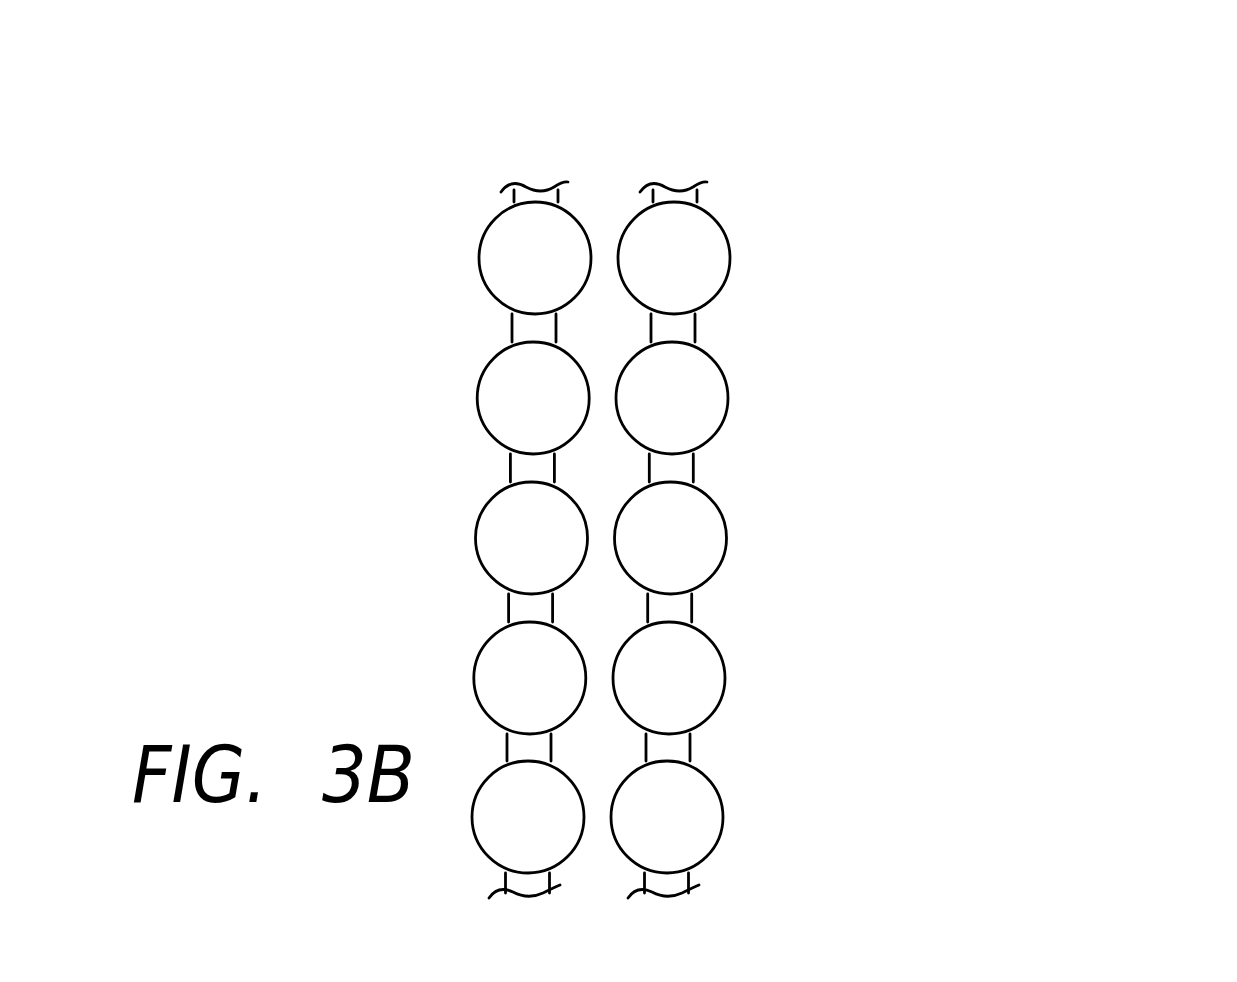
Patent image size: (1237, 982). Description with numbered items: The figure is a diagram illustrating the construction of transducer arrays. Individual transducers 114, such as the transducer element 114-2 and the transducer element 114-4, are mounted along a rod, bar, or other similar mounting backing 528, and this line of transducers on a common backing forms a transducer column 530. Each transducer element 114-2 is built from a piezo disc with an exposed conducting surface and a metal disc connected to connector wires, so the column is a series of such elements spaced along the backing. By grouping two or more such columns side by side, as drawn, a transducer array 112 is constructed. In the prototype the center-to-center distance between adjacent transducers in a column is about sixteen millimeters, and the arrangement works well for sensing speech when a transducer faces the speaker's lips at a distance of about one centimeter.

The transducer array 112 is at (768, 242).
The transducer column 530 is at (695, 157).
The transducers 114 is at (708, 267).
The transducer element 114-2 is at (705, 403).
The transducer element 114-4 is at (702, 672).
The mounting backing 528 is at (692, 748).